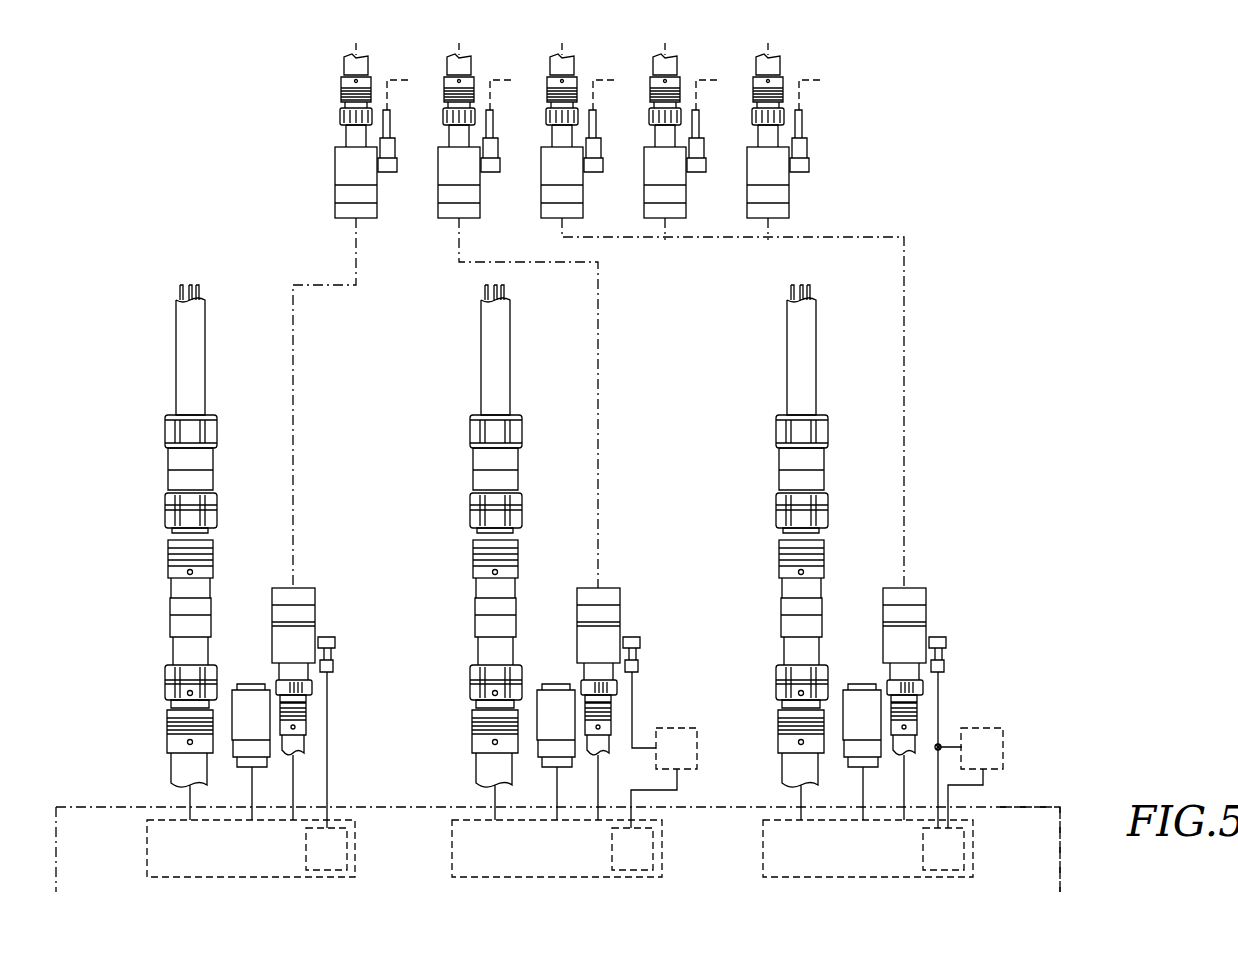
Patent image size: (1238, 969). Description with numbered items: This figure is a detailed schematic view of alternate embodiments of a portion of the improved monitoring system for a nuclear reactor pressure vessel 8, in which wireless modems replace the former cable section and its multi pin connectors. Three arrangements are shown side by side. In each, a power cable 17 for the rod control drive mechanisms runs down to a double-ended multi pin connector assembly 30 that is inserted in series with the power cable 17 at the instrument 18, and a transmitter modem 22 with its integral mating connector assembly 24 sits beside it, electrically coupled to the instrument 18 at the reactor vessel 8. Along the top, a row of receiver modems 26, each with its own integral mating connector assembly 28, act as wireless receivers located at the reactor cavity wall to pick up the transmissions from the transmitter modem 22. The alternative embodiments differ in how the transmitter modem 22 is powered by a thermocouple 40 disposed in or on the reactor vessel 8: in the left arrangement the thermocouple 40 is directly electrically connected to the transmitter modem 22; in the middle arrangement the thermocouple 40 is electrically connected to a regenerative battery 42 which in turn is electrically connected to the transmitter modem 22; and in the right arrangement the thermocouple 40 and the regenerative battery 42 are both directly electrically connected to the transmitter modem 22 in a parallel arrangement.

The nuclear reactor pressure vessel 8 is at (1027, 806).
The power cable 17 is at (468, 350).
The instrument 18 is at (658, 856).
The transmitter modem 22 is at (619, 634).
The integral mating connector assembly 24 is at (579, 724).
The receiver modem 26 is at (536, 182).
The integral mating connector assembly 28 is at (537, 108).
The double-ended multi pin connector assembly 30 is at (466, 680).
The thermocouple 40 is at (560, 848).
The regenerative battery 42 is at (837, 720).